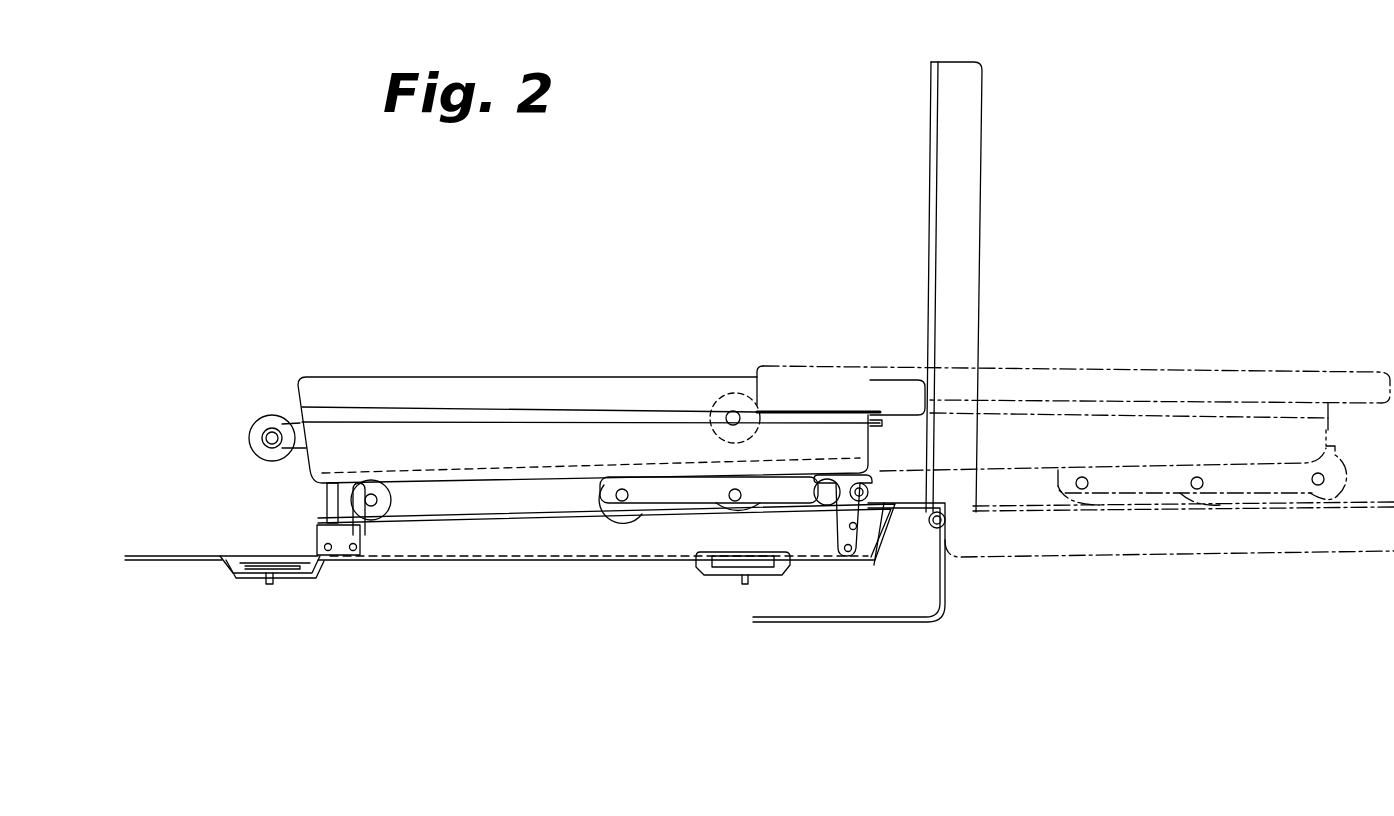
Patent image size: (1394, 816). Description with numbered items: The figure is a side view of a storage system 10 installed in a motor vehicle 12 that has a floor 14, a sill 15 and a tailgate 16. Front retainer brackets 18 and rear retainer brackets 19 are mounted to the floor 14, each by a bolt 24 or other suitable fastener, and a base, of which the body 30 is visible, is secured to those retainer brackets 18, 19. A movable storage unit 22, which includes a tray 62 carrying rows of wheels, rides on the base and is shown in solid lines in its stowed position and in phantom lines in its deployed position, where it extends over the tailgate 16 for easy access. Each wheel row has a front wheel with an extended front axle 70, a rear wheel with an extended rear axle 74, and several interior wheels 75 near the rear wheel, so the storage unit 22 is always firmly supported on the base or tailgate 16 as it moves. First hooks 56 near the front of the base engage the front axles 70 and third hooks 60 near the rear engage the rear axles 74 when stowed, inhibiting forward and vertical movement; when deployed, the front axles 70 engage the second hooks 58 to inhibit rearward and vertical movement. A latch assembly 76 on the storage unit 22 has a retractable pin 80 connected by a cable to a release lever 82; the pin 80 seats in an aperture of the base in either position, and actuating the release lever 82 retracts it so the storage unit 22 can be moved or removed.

The storage system 10 is at (254, 381).
The motor vehicle 12 is at (952, 622).
The floor 14 is at (229, 567).
The sill 15 is at (884, 508).
The tailgate 16 is at (980, 132).
The front retainer bracket 18 is at (302, 575).
The rear retainer bracket 19 is at (718, 575).
The storage unit 22 is at (520, 378).
The bolt 24 is at (263, 582).
The body 30 is at (549, 540).
The hook 56 is at (380, 512).
The hook 58 is at (826, 508).
The hook 60 is at (880, 498).
The tray 62 is at (320, 477).
The front axle 70 is at (365, 528).
The rear axle 74 is at (860, 505).
The interior wheel 75 is at (722, 508).
The latch assembly 76 is at (302, 500).
The pin 80 is at (320, 515).
The release lever 82 is at (882, 425).